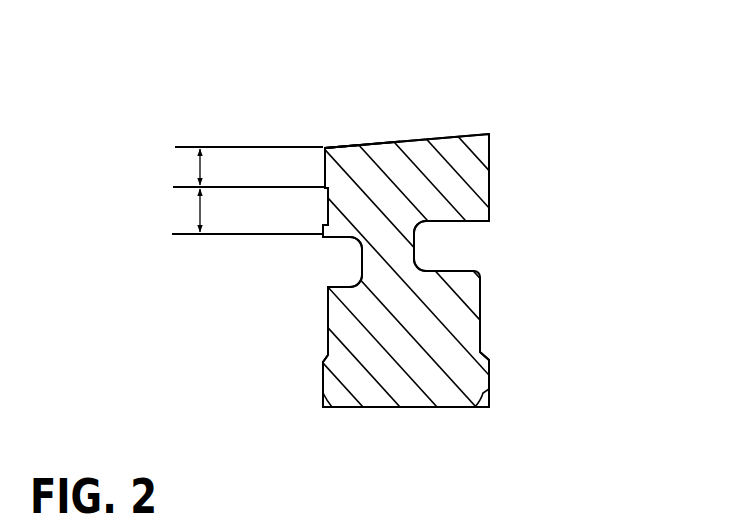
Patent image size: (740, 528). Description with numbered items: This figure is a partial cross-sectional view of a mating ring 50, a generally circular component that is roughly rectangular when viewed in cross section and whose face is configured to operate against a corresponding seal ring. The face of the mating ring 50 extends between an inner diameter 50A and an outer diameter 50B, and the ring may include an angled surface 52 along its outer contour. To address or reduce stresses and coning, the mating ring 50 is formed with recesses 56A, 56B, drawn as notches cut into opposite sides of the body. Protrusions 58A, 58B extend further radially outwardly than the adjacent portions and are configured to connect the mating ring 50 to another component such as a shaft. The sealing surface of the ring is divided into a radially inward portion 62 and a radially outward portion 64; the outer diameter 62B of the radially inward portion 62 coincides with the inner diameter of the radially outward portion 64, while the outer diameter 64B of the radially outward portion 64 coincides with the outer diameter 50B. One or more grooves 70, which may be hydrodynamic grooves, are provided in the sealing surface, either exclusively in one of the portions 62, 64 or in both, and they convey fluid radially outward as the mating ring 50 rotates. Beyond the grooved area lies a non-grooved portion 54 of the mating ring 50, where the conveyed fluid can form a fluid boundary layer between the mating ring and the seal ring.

The mating ring 50 is at (523, 140).
The inner diameter 50A is at (322, 238).
The outer diameter 50B is at (321, 142).
The angled surface 52 is at (404, 135).
The non-grooved portion 54 is at (324, 163).
The recess 56A is at (332, 273).
The recess 56B is at (460, 248).
The protrusion 58A is at (325, 377).
The protrusion 58B is at (492, 375).
The radially inward portion/region 62 is at (195, 212).
The outer diameter of radially inward portion/region 62B is at (307, 182).
The radially outward portion/region 64 is at (195, 162).
The outer diameter of radially outward portion/region 64B is at (342, 146).
The groove 70 is at (323, 212).